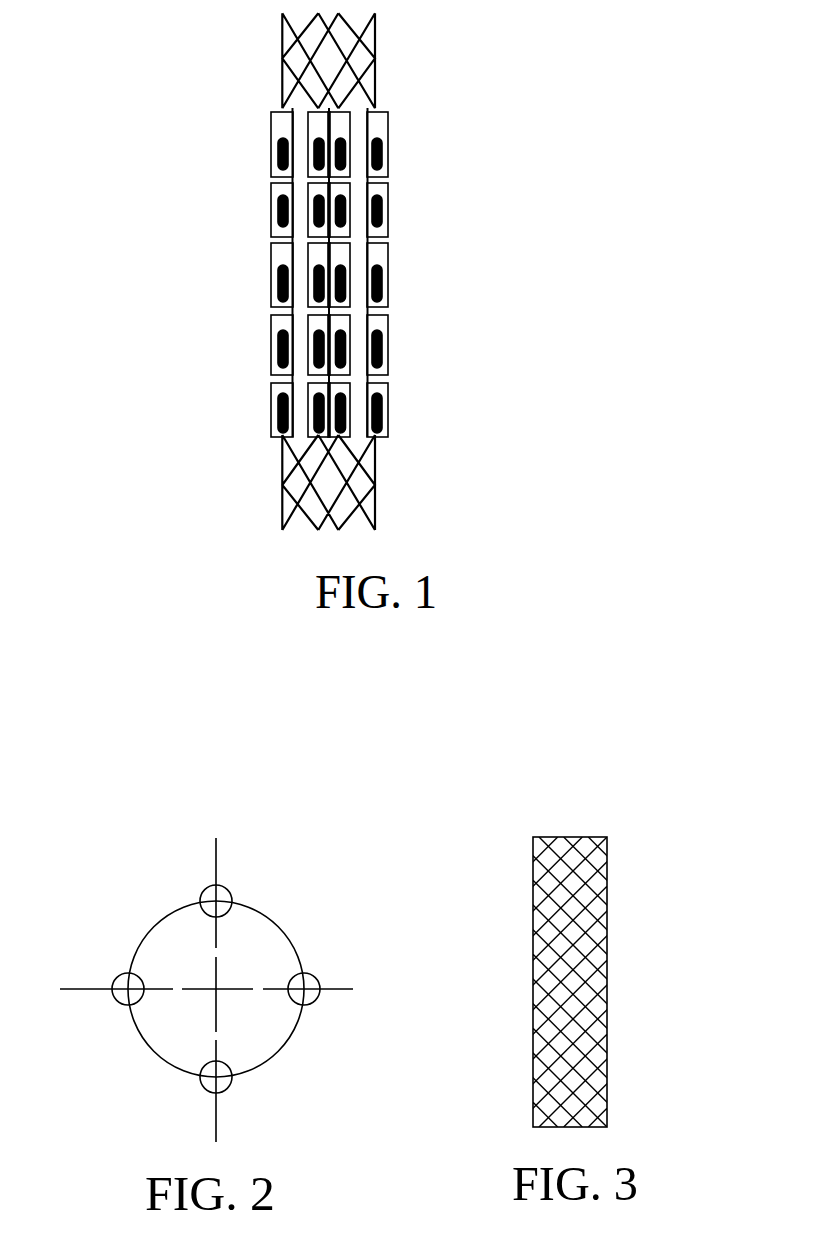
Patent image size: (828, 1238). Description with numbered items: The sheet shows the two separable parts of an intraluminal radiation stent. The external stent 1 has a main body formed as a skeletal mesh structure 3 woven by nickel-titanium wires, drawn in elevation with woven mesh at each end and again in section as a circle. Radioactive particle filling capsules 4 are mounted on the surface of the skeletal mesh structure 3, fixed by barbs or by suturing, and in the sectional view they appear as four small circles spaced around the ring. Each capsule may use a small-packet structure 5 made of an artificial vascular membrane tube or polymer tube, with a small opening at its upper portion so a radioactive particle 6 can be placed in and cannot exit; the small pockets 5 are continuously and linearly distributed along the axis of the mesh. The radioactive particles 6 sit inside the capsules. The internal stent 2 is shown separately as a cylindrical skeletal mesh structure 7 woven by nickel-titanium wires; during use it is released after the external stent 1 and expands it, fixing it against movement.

In FIG. 1, the external stent 1 is at (357, 362).
In FIG. 3, the internal stent 2 is at (590, 1083).
In FIG. 1, the skeletal mesh structure 3 is at (377, 92).
In FIG. 2, the skeletal mesh structure 3 is at (288, 930).
In FIG. 1, the radioactive particle filling capsules 4 is at (383, 410).
In FIG. 2, the radioactive particle filling capsules 4 is at (313, 978).
In FIG. 1, the small-packet structure 5 is at (382, 190).
In FIG. 1, the radioactive particles 6 is at (382, 290).
In FIG. 3, the skeletal mesh structure 7 is at (598, 912).